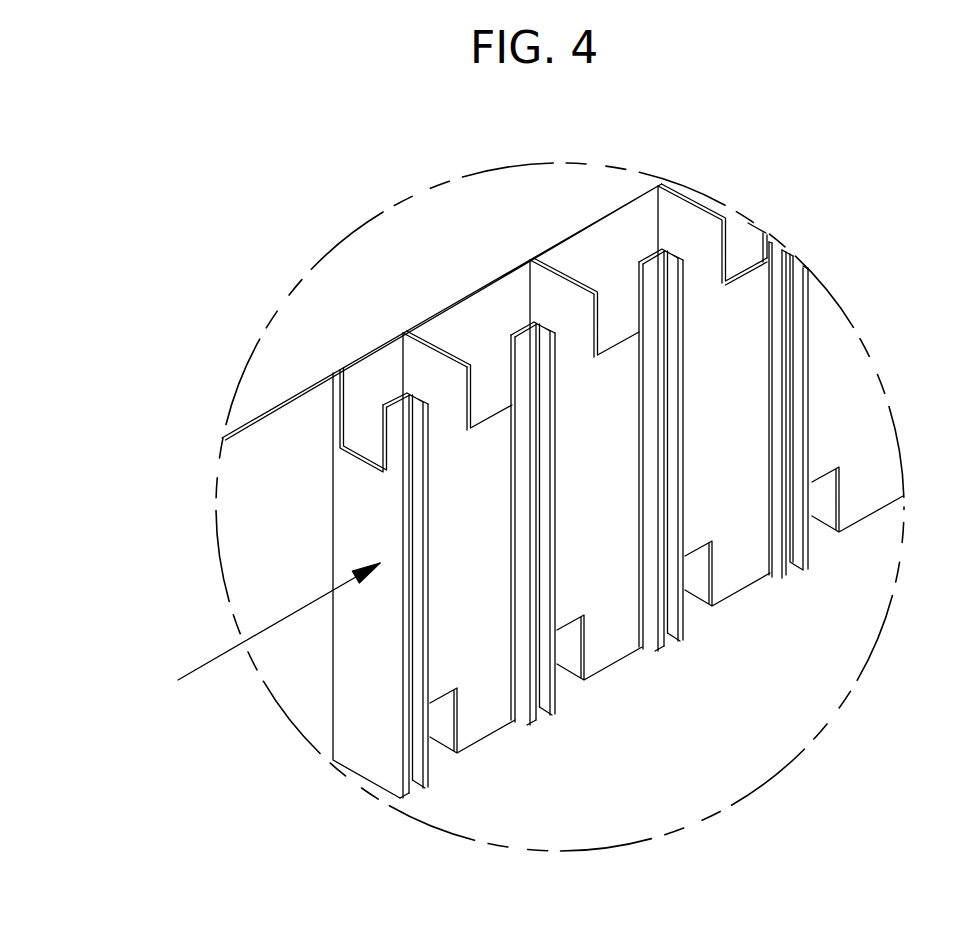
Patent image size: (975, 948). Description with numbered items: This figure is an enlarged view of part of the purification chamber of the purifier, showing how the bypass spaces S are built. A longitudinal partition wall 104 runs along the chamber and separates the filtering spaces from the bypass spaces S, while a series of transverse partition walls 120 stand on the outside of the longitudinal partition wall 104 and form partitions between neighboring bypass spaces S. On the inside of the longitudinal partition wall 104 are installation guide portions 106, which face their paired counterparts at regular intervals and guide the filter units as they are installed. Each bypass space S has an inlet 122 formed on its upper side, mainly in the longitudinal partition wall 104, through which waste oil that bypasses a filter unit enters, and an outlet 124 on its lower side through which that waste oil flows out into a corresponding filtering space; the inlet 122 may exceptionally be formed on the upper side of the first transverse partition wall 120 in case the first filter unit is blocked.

The longitudinal partition wall 104 is at (387, 340).
The installation guide portion 106 is at (736, 215).
The transverse partition wall 120 is at (560, 259).
The inlet 122 is at (492, 384).
The outlet 124 is at (447, 737).
The bypass space S is at (497, 322).